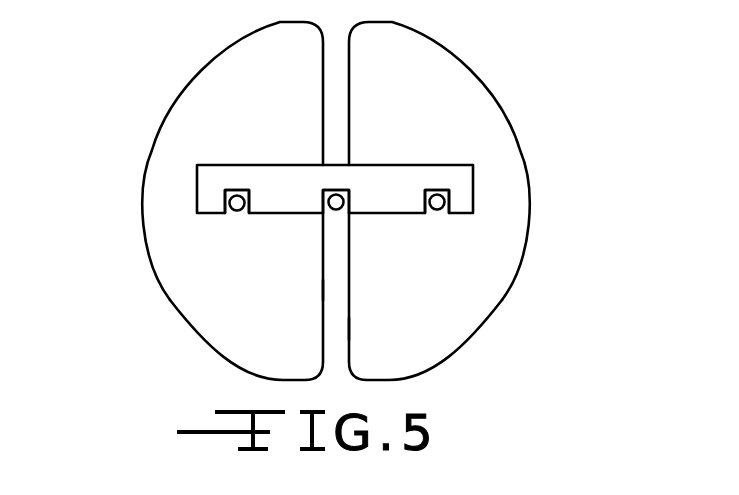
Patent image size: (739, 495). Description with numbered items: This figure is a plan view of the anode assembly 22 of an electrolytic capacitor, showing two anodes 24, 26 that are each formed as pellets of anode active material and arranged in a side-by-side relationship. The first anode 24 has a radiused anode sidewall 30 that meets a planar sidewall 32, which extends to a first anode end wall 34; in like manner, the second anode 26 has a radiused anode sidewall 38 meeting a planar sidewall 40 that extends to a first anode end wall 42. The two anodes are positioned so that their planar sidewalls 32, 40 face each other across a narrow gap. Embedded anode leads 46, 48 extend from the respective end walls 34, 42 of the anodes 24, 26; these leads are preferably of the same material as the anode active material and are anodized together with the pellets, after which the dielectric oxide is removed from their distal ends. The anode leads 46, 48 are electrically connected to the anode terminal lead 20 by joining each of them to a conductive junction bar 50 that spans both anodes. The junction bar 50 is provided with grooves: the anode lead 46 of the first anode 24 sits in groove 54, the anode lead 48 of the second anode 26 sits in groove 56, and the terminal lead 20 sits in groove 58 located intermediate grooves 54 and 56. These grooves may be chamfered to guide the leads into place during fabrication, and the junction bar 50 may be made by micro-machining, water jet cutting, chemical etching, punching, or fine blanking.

The anode terminal lead 20 is at (333, 210).
The anode assembly 22 is at (322, 195).
The anode 24 is at (172, 237).
The anode 26 is at (487, 237).
The radiused anode sidewall 30 is at (189, 203).
The planar sidewall 32 is at (327, 299).
The first anode end wall 34 is at (213, 330).
The radiused anode sidewall 38 is at (469, 203).
The planar sidewall 40 is at (344, 334).
The first anode end wall 42 is at (437, 342).
The anode lead 46 is at (236, 212).
The anode lead 48 is at (437, 210).
The conductive junction bar 50 is at (335, 152).
The groove 54 is at (246, 188).
The groove 56 is at (437, 190).
The groove 58 is at (337, 190).